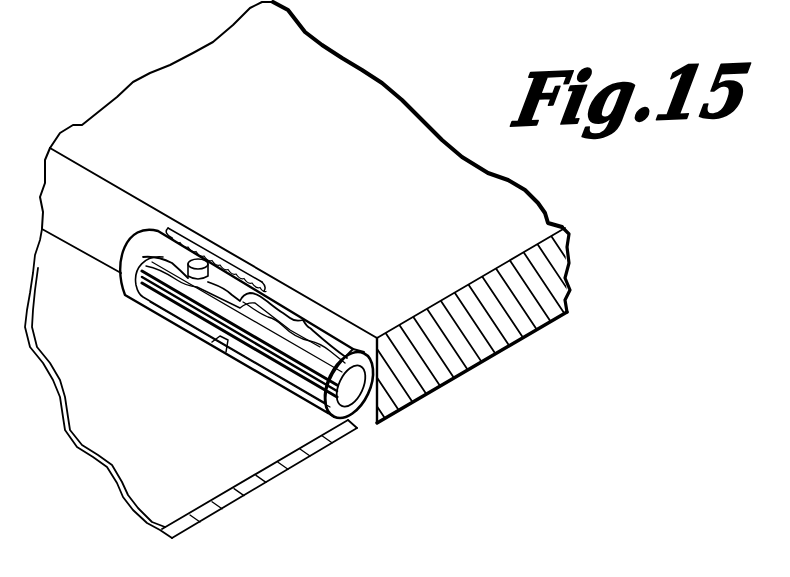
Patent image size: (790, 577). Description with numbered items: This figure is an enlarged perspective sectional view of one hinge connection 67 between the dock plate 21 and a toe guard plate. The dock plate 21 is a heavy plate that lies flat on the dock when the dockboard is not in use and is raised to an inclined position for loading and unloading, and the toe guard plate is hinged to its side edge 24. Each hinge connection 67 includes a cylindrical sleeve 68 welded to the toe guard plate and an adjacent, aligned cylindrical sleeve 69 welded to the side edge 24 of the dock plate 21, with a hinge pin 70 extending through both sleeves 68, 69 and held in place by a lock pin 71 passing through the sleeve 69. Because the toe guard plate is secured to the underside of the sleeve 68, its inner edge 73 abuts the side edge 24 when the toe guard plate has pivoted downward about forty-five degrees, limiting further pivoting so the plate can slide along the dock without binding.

The dock plate 21 is at (336, 93).
The side edge 24 is at (92, 213).
The hinge connection 67 is at (268, 292).
The cylindrical sleeve 68 is at (331, 326).
The cylindrical sleeve 69 is at (229, 266).
The hinge pin 70 is at (239, 334).
The lock pin 71 is at (201, 258).
The inner edge 73 is at (80, 242).